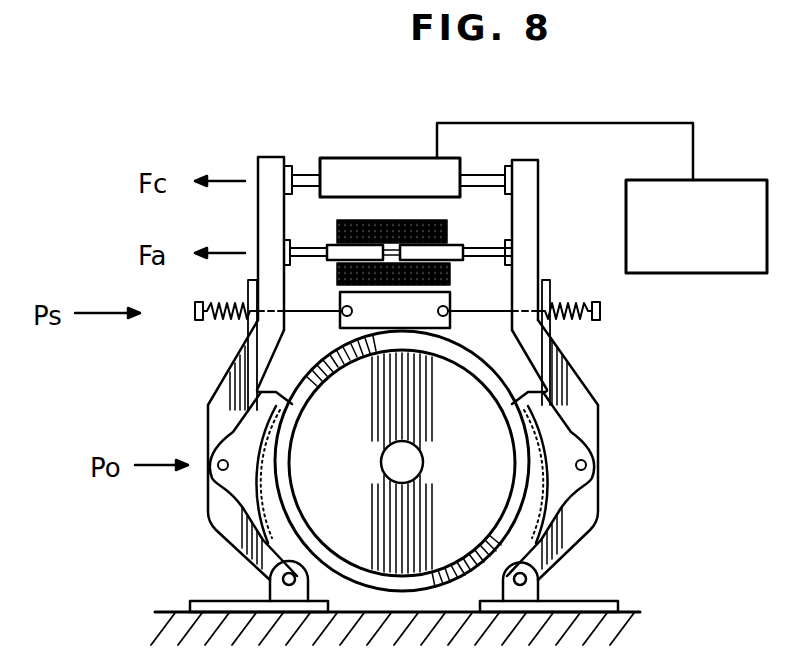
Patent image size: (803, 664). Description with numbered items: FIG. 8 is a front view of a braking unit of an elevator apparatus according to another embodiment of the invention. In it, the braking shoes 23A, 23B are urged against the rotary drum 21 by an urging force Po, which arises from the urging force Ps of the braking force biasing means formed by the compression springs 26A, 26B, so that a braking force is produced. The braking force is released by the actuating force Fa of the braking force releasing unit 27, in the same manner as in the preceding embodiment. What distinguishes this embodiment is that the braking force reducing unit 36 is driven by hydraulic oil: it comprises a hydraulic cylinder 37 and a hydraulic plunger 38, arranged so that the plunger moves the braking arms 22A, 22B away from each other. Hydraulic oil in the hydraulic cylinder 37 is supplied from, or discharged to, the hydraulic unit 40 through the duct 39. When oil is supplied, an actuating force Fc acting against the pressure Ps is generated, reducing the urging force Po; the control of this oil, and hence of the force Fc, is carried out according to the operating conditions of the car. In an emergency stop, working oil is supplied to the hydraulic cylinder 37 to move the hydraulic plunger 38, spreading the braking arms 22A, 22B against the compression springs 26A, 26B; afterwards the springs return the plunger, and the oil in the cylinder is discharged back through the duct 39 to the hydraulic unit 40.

The rotary drum 21 is at (482, 366).
The braking arm 22A is at (586, 405).
The braking arm 22B is at (268, 156).
The braking shoe 23A is at (549, 506).
The braking shoe 23B is at (261, 513).
The compression spring 26A is at (585, 320).
The compression spring 26B is at (238, 325).
The braking force releasing unit 27 is at (432, 222).
The braking force reducing unit 36 is at (396, 106).
The hydraulic cylinder 37 is at (378, 159).
The hydraulic plunger 38 is at (303, 172).
The duct 39 is at (624, 123).
The hydraulic unit 40 is at (693, 274).